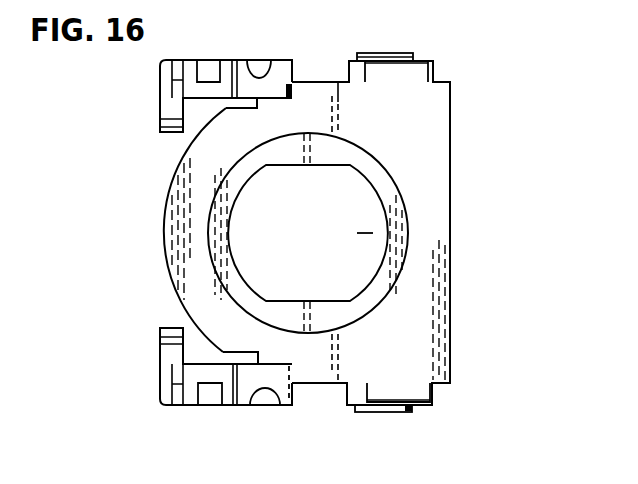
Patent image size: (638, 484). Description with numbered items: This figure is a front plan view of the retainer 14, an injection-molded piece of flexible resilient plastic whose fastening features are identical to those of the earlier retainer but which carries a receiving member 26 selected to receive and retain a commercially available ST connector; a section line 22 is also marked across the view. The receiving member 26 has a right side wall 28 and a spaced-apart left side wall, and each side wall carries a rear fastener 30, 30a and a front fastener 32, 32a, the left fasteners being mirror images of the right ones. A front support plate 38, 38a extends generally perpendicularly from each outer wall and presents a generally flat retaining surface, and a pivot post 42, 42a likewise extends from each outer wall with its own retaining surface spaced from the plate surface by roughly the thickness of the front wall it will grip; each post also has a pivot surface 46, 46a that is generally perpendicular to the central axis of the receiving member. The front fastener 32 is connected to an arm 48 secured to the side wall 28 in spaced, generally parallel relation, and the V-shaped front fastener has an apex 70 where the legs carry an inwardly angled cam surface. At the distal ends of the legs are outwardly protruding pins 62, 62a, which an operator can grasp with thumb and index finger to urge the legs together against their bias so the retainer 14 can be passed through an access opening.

The retainer 14 is at (486, 117).
The section line 22 is at (168, 231).
The receiving member 26 is at (237, 170).
The right side wall 28 is at (422, 343).
The rear fastener 30 is at (445, 395).
The rear fastener 30a is at (440, 72).
The front fastener 32 is at (287, 407).
The front fastener 32a is at (308, 54).
The front support plate 38 is at (425, 405).
The front support plate 38a is at (418, 60).
The pivot post 42 is at (373, 428).
The pivot post 42a is at (366, 34).
The pivot surface 46 is at (402, 428).
The pivot surface 46a is at (394, 55).
The arm 48 is at (392, 54).
The pins 62 is at (228, 405).
The pins 62a is at (222, 60).
The apex 70 is at (318, 0).